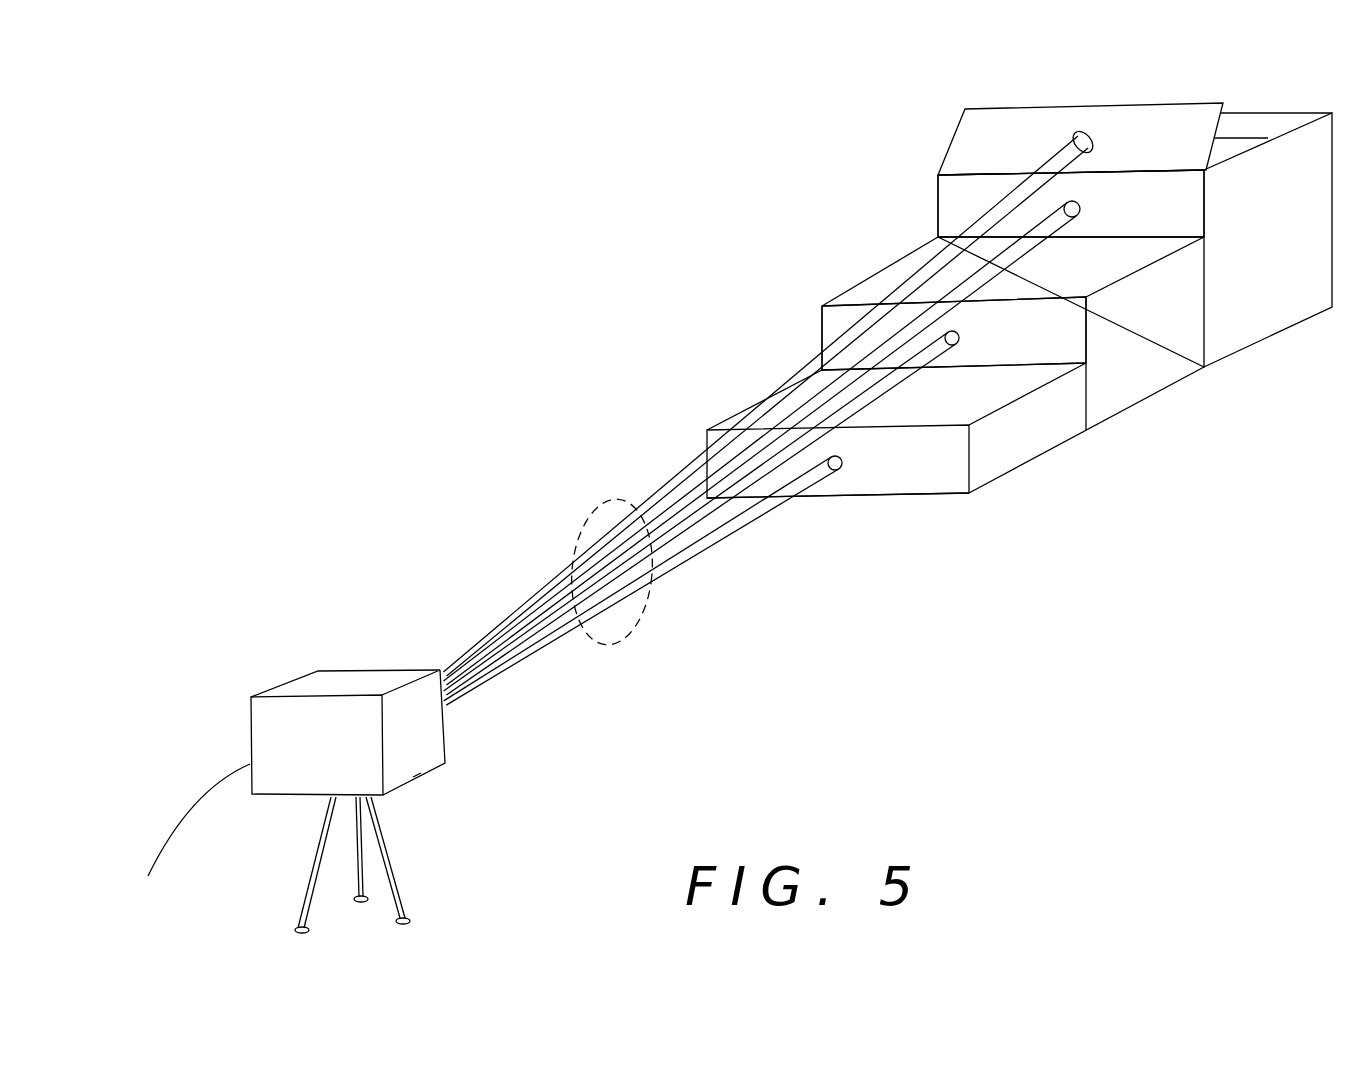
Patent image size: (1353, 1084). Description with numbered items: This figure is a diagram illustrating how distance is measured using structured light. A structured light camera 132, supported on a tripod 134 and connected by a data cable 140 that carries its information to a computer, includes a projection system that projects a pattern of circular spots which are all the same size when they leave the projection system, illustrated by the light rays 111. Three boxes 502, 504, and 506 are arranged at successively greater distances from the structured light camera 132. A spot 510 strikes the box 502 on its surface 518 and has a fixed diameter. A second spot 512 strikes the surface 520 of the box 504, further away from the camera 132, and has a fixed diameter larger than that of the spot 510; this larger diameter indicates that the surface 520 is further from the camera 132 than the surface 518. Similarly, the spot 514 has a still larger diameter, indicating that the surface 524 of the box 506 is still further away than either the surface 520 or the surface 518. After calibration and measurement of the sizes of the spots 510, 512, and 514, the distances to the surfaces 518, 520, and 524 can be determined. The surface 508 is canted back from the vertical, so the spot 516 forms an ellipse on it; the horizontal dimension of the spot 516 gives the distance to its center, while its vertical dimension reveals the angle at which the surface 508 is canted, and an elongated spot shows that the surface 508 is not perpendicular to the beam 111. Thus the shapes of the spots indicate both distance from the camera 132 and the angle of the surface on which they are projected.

The light rays 111 is at (572, 538).
The structured light camera 132 is at (280, 686).
The tripod 134 is at (390, 858).
The data cable 140 is at (195, 806).
The box 502 is at (1048, 452).
The box 504 is at (1167, 390).
The box 506 is at (1288, 328).
The surface 508 is at (936, 153).
The spot 510 is at (843, 462).
The second spot 512 is at (960, 338).
The spot 514 is at (1081, 205).
The spot 516 is at (1093, 137).
The surface 518 is at (948, 495).
The surface 520 is at (1072, 325).
The surface 524 is at (1187, 205).